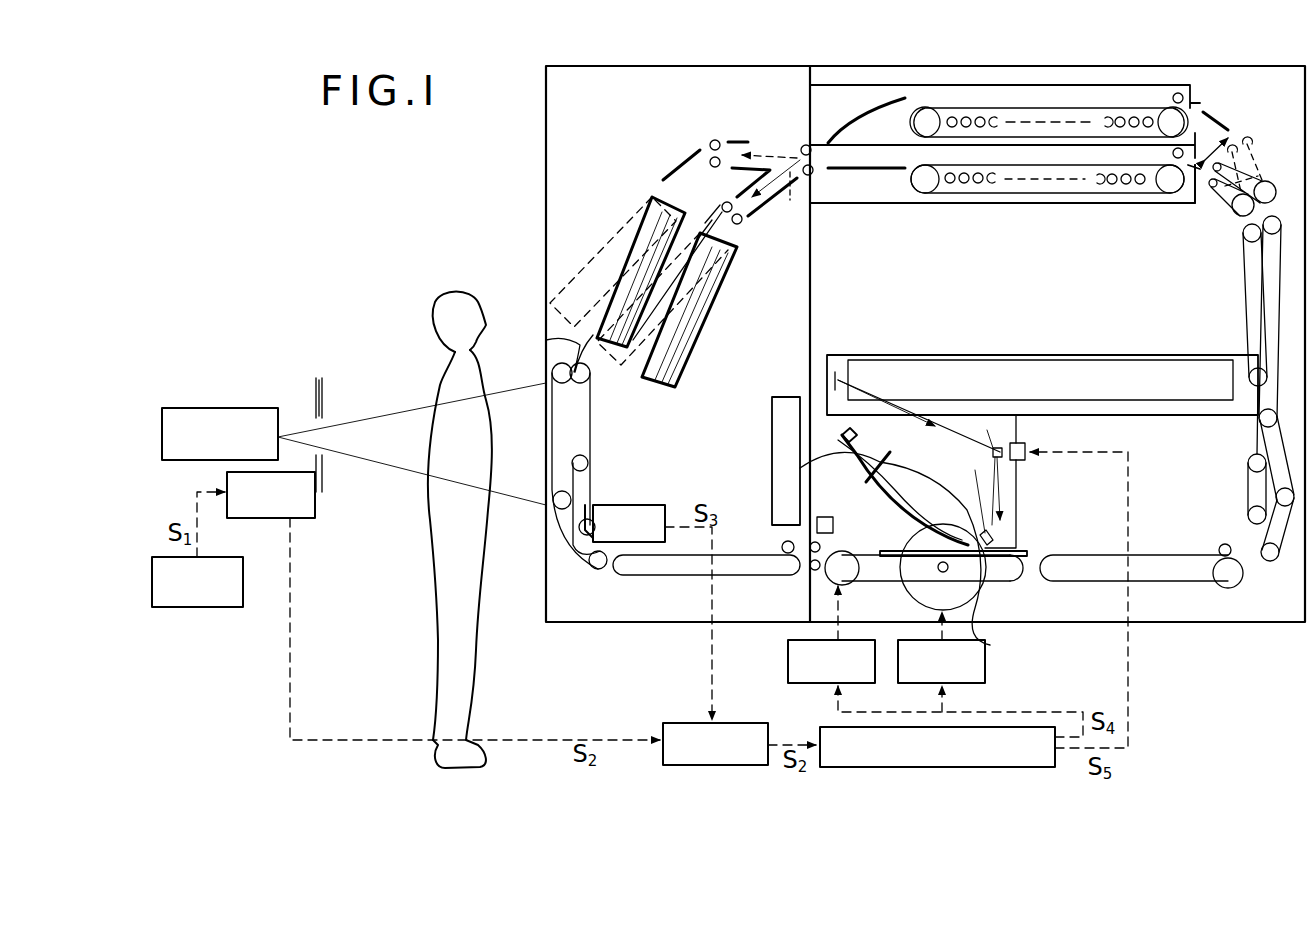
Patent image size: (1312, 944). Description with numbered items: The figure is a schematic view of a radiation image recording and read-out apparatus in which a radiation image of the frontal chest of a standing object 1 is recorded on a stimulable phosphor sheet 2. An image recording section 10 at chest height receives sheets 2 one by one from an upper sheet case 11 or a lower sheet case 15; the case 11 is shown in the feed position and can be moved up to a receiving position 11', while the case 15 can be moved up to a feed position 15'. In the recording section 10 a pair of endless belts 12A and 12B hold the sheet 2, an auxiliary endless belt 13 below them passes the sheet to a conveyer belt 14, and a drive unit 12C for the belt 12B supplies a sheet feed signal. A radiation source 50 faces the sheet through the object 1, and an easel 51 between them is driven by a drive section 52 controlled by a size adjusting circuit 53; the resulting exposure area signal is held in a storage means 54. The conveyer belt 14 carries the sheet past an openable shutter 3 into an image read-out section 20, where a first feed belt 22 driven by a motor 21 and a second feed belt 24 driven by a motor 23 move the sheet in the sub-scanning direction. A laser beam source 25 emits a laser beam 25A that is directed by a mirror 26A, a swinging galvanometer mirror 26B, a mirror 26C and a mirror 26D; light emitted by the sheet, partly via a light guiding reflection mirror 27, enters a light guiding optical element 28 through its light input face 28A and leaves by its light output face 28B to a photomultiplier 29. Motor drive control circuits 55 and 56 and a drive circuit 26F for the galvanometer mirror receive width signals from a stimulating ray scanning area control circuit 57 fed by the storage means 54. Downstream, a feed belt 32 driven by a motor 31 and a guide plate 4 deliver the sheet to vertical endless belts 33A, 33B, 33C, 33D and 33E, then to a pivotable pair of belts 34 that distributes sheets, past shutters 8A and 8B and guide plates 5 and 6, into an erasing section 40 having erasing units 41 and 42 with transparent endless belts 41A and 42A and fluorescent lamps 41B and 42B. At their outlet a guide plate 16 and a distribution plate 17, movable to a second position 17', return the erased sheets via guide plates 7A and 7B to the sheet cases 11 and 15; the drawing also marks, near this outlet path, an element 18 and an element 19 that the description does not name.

The object 1 is at (426, 302).
The stimulable phosphor sheet 2 is at (550, 352).
The openable shutter 3 is at (782, 547).
The guide plate 4 is at (1235, 556).
The guide plate 5 is at (1230, 128).
The guide plate 6 is at (1198, 178).
The guide plate 7A is at (862, 122).
The guide plate 7B is at (855, 172).
The shutter 8A is at (1198, 97).
The shutter 8B is at (1198, 178).
The image recording section 10 is at (603, 452).
The sheet case 11 is at (641, 259).
The sheet receiving position of sheet case 11 11' is at (613, 262).
The endless belt 12A is at (553, 383).
The endless belt 12B is at (595, 433).
The drive unit 12C is at (657, 504).
The auxiliary endless belt 13 is at (586, 552).
The conveyer belt 14 is at (686, 575).
The sheet case 15 is at (694, 310).
The sheet feed position of sheet case 15 15' is at (662, 324).
The guide plate 16 is at (752, 212).
The distribution plate 17 is at (772, 150).
The alternate position of distribution plate 17' is at (778, 198).
The sheet guide 18 is at (712, 222).
The guide 19 is at (682, 162).
The image read-out section 20 is at (993, 590).
The motor 21 is at (820, 582).
The first feed belt 22 is at (848, 560).
The motor 23 is at (905, 590).
The second feed belt 24 is at (1025, 582).
The laser beam source 25 is at (1015, 358).
The laser beam 25A is at (940, 425).
The mirror 26A is at (838, 372).
The galvanometer mirror 26B is at (1013, 442).
The mirror 26C is at (992, 540).
The mirror 26D is at (996, 445).
The drive circuit 26F is at (1027, 450).
The light guiding reflection mirror 27 is at (1030, 546).
The light guiding optical element 28 is at (1003, 478).
The light input face 28A is at (988, 625).
The light output face 28B is at (878, 462).
The photomultiplier 29 is at (805, 468).
The motor 31 is at (1240, 584).
The feed belt 32 is at (1166, 582).
The endless belt 33A is at (1262, 530).
The endless belt 33B is at (1275, 440).
The endless belt 33C is at (1275, 288).
The endless belt 33D is at (1243, 268).
The endless belt 33E is at (1250, 484).
The pair of belts 34 is at (1258, 178).
The erasing section 40 is at (1125, 84).
The erasing unit 41 is at (1060, 106).
The transparent endless belt 41A is at (1015, 108).
The fluorescent lamps 41B is at (967, 116).
The erasing unit 42 is at (1066, 196).
The transparent endless belt 42A is at (1010, 196).
The fluorescent lamps 42B is at (964, 184).
The radiation source 50 is at (255, 407).
The easel 51 is at (325, 385).
The drive section 52 is at (318, 504).
The size adjusting circuit 53 is at (222, 608).
The exposure area information storage means 54 is at (680, 722).
The motor drive control circuit 55 is at (787, 656).
The motor drive control circuit 56 is at (988, 672).
The stimulating ray scanning area control circuit 57 is at (825, 726).